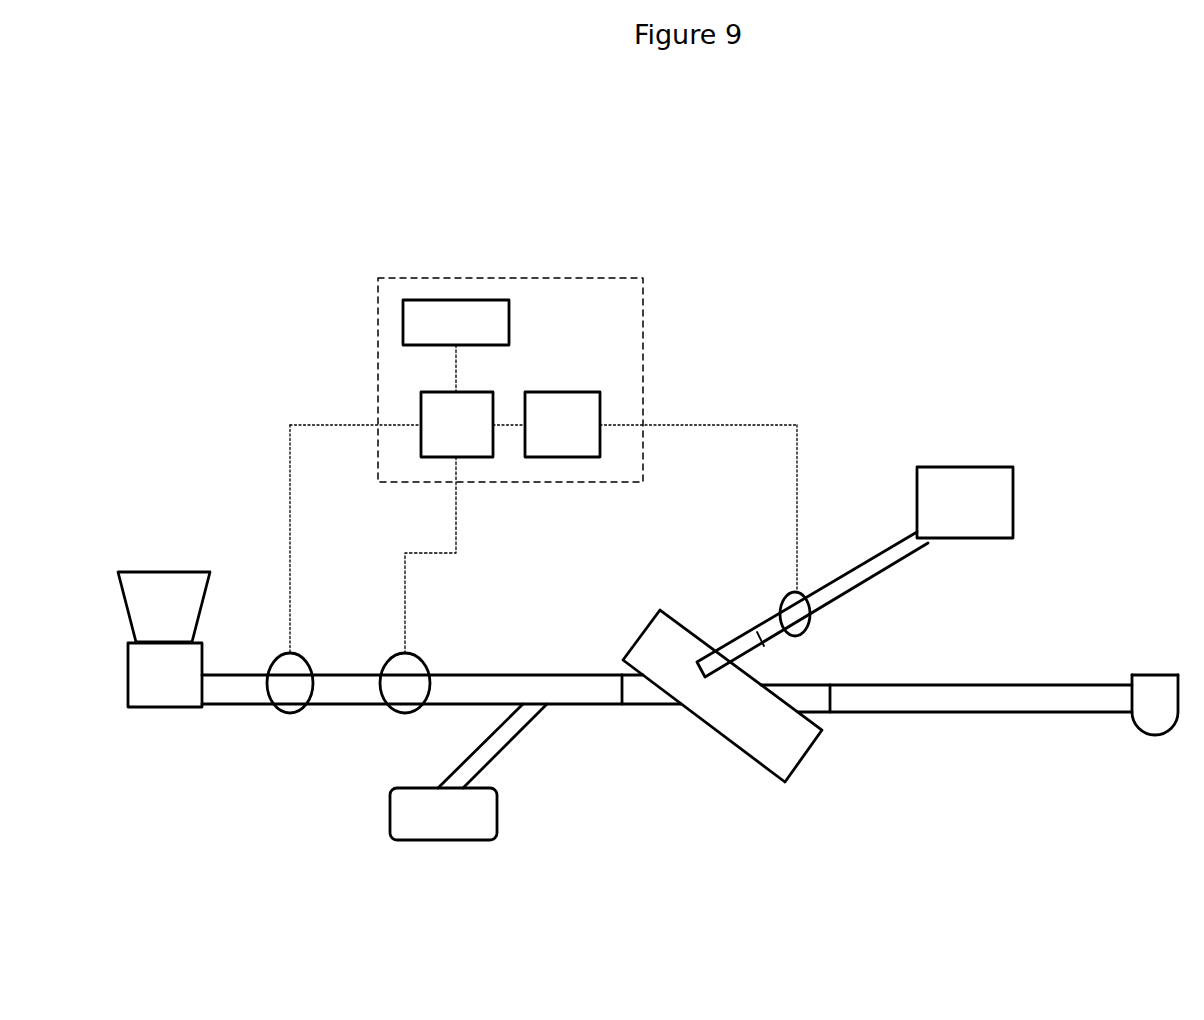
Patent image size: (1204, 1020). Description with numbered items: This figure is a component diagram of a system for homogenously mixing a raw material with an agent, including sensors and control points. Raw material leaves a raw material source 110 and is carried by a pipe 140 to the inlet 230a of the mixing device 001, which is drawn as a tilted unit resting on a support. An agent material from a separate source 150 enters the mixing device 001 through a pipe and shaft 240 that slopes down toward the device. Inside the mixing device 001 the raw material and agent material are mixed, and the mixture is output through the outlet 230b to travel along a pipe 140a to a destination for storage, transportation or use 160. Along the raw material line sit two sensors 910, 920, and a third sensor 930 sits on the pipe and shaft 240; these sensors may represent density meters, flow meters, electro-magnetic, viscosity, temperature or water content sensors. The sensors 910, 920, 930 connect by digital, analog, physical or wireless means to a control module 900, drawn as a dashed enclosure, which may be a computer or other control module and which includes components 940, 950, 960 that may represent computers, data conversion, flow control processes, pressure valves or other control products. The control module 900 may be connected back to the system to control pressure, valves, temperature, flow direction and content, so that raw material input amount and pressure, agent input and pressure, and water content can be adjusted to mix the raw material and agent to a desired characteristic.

The mixing device 001 is at (713, 713).
The raw material source 110 is at (151, 578).
The pipe 140 is at (228, 703).
The pipe 140a is at (987, 690).
The agent material source 150 is at (960, 492).
The destination for storage, transportation or use 160 is at (1163, 668).
The inlet 230a is at (654, 690).
The outlet 230b is at (817, 703).
The pipe and shaft 240 is at (760, 637).
The control module 900 is at (505, 276).
The sensor 910 is at (294, 703).
The sensor 920 is at (398, 690).
The sensor 930 is at (793, 582).
The control module component 940 is at (456, 322).
The control module component 950 is at (457, 424).
The control module component 960 is at (562, 424).